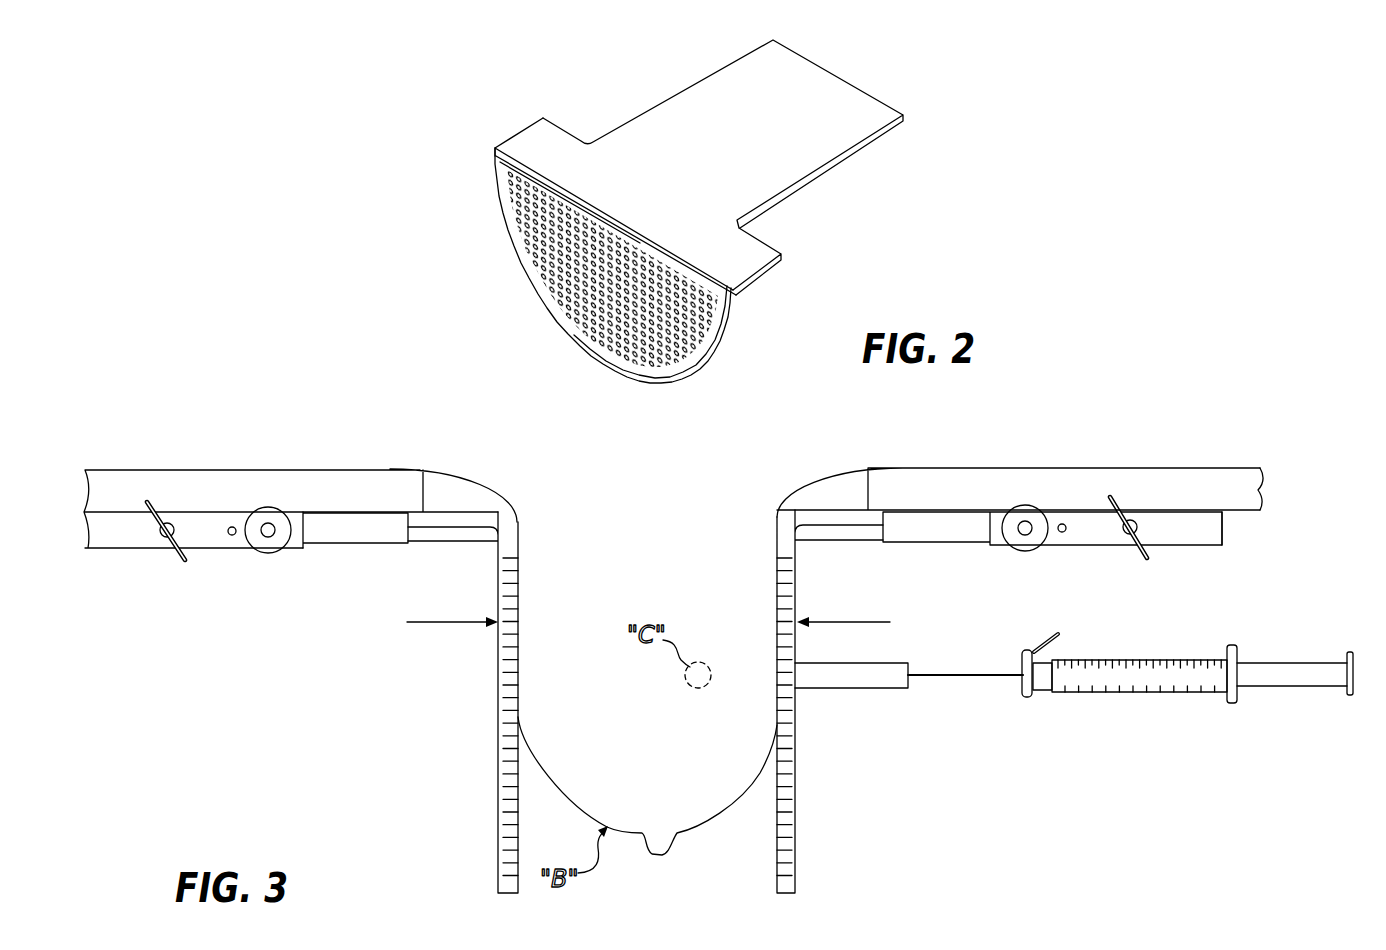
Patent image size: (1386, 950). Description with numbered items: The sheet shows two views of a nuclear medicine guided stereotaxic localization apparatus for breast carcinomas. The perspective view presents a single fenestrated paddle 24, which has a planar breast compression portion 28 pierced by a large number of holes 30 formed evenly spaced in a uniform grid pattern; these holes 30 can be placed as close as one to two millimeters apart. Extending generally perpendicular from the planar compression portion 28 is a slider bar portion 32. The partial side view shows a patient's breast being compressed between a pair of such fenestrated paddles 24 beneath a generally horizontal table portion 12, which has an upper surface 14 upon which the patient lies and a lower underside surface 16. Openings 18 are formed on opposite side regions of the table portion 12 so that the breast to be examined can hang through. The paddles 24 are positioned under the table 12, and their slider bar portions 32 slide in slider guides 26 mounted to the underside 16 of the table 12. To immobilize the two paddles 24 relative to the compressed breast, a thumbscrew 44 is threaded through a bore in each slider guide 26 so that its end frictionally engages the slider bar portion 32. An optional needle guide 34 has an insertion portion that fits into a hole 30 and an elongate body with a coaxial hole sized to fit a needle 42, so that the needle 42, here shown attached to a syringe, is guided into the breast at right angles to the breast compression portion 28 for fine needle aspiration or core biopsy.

In FIG. 3, the table portion 12 is at (978, 480).
In FIG. 3, the upper surface 14 is at (1240, 465).
In FIG. 3, the underside surface 16 is at (1242, 513).
In FIG. 3, the openings 18 is at (443, 485).
In FIG. 2, the fenestrated paddle 24 is at (659, 215).
In FIG. 3, the fenestrated paddle 24 is at (500, 792).
In FIG. 3, the slider guide 26 is at (200, 537).
In FIG. 2, the breast compression portion 28 is at (497, 168).
In FIG. 2, the holes 30 is at (543, 290).
In FIG. 3, the holes 30 is at (795, 818).
In FIG. 2, the slider bar portion 32 is at (777, 177).
In FIG. 3, the needle guide 34 is at (865, 683).
In FIG. 3, the needle 42 is at (965, 677).
In FIG. 3, the thumbscrew 44 is at (160, 540).